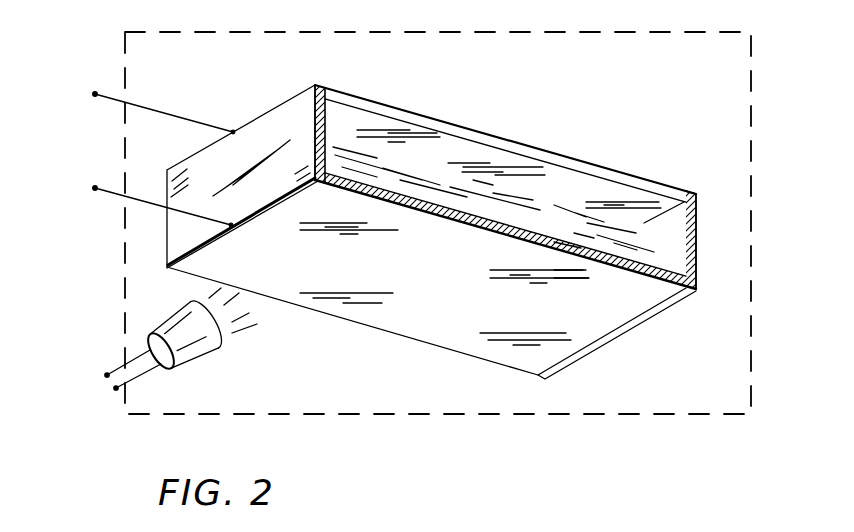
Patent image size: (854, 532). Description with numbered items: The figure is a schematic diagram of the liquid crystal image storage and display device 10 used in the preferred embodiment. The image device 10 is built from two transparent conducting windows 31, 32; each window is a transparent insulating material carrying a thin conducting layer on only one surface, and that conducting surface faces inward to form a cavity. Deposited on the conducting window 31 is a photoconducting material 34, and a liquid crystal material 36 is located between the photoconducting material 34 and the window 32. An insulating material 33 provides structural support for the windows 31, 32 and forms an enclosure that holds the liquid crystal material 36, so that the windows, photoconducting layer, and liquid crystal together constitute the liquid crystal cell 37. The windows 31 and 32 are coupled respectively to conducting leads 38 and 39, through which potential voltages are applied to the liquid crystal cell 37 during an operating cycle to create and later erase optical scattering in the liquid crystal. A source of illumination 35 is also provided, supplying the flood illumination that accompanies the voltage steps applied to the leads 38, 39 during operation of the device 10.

The image storage and display device 10 is at (125, 88).
The transparent conducting window 31 is at (430, 117).
The transparent conducting window 32 is at (468, 334).
The insulating material 33 is at (271, 130).
The photoconducting material 34 is at (628, 190).
The source of illumination 35 is at (215, 350).
The liquid crystal material 36 is at (508, 207).
The liquid crystal cell 37 is at (521, 131).
The conducting lead 38 is at (93, 95).
The conducting lead 39 is at (94, 190).